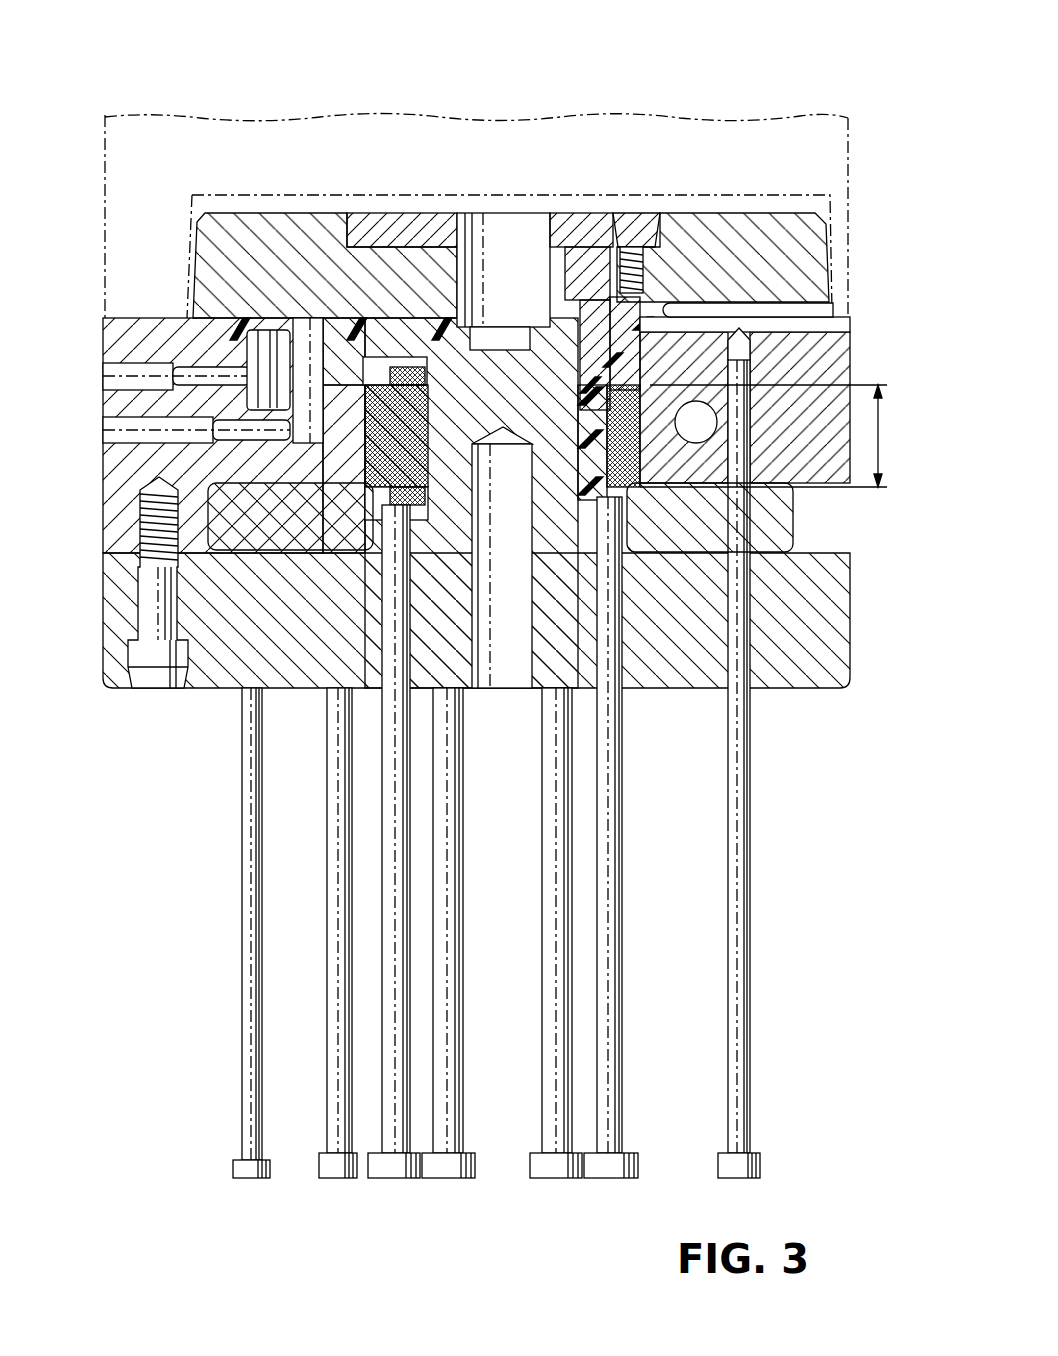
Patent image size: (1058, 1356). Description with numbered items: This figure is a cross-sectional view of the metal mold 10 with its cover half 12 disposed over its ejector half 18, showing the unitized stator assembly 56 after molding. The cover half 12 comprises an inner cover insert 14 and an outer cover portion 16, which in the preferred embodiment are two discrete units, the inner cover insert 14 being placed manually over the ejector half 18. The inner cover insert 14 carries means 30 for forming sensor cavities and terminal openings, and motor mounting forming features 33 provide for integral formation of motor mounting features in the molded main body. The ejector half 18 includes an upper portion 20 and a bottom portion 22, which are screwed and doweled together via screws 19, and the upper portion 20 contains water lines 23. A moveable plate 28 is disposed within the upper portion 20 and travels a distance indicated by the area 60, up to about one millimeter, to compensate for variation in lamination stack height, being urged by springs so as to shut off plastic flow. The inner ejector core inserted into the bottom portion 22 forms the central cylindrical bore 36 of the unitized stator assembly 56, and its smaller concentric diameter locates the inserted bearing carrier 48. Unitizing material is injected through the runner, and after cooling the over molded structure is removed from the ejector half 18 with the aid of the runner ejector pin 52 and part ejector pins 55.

The metal mold 10 is at (88, 92).
The cover half 12 is at (103, 186).
The inner cover insert 14 is at (197, 258).
The outer cover portion 16 is at (197, 115).
The ejector half 18 is at (115, 310).
The screws 19 is at (155, 680).
The upper portion 20 is at (103, 403).
The bottom portion 22 is at (103, 647).
The water lines 23 is at (695, 408).
The moveable plate 28 is at (247, 533).
The means for forming sensor cavities 30 is at (587, 253).
The motor mounting forming features 33 is at (262, 340).
The central cylindrical bore 36 is at (428, 420).
The bearing carrier 48 is at (542, 303).
The runner ejector pin 52 is at (737, 355).
The part ejector pins 55 is at (252, 1178).
The unitized stator assembly 56 is at (385, 443).
The area of moveable plate travel 60 is at (878, 432).